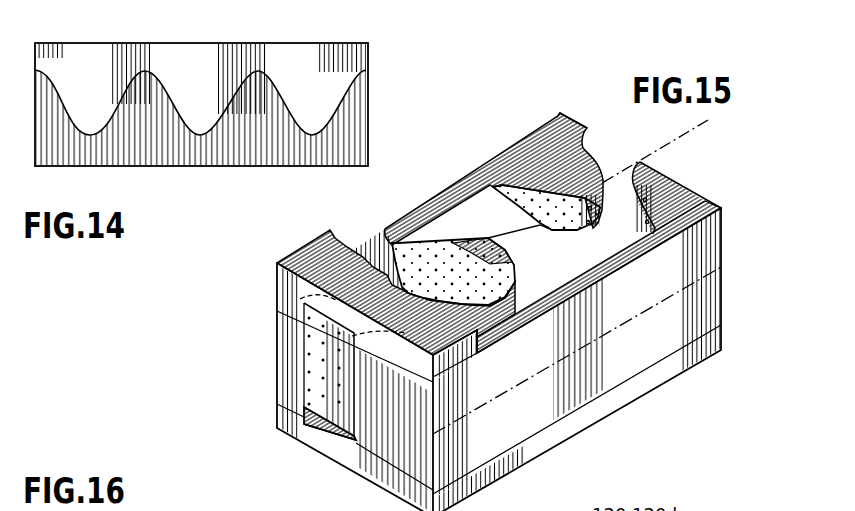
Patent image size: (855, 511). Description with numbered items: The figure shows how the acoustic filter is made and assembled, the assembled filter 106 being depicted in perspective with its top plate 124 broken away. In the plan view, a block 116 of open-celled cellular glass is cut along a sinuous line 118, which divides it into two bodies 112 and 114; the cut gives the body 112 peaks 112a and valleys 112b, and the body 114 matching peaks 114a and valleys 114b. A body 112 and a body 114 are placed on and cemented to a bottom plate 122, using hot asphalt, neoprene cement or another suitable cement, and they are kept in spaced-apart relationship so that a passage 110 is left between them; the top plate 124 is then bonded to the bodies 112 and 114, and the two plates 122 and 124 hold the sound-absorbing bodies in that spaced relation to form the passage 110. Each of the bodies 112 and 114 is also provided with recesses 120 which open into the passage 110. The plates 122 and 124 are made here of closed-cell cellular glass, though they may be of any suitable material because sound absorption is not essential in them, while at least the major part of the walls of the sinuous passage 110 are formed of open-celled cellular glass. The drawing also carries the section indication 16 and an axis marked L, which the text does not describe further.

In FIG. 15, the block 106 is at (724, 294).
In FIG. 15, the passage 110 is at (604, 162).
In FIG. 14, the body 112 is at (118, 43).
In FIG. 15, the body 112 is at (283, 316).
In FIG. 15, the peaks 112a is at (495, 245).
In FIG. 15, the valleys 112b is at (390, 245).
In FIG. 14, the body 114 is at (192, 158).
In FIG. 15, the body 114 is at (385, 440).
In FIG. 15, the peaks 114a is at (551, 230).
In FIG. 15, the valleys 114b is at (558, 277).
In FIG. 14, the block 116 is at (368, 48).
In FIG. 14, the sinuous line 118 is at (163, 77).
In FIG. 15, the recesses 120 is at (307, 363).
In FIG. 15, the bottom plate 122 is at (286, 421).
In FIG. 15, the top plate 124 is at (278, 279).
In FIG. 15, the section line 16- 16 is at (610, 113).
In FIG. 15, the longitudinal axis L is at (697, 131).